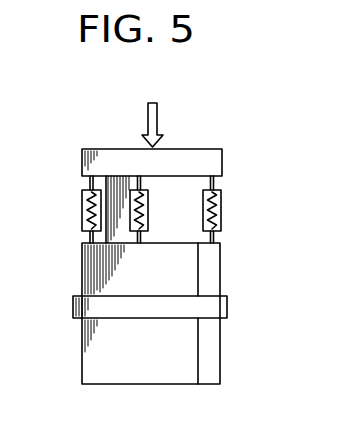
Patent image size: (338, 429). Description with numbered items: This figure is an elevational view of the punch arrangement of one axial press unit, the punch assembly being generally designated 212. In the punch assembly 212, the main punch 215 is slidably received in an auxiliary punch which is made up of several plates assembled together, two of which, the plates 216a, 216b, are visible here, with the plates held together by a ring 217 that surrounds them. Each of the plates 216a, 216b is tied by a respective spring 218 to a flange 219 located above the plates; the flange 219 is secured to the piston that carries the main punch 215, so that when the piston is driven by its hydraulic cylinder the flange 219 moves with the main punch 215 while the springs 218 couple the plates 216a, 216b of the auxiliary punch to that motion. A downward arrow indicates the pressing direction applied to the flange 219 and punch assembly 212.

The punch assembly 212 is at (209, 138).
The main punch 215 is at (118, 244).
The plate 216a is at (88, 362).
The plate 216b is at (213, 362).
The ring 217 is at (225, 307).
The springs 218 is at (82, 205).
The flange 219 is at (223, 158).